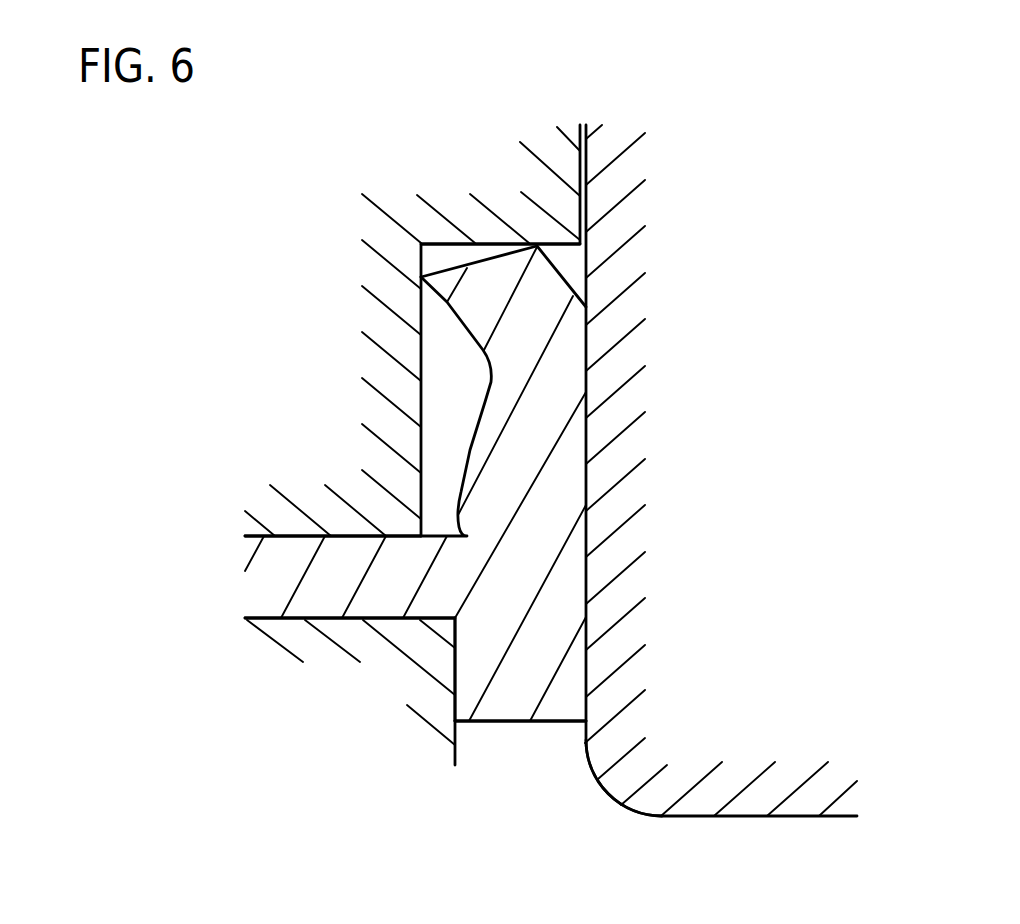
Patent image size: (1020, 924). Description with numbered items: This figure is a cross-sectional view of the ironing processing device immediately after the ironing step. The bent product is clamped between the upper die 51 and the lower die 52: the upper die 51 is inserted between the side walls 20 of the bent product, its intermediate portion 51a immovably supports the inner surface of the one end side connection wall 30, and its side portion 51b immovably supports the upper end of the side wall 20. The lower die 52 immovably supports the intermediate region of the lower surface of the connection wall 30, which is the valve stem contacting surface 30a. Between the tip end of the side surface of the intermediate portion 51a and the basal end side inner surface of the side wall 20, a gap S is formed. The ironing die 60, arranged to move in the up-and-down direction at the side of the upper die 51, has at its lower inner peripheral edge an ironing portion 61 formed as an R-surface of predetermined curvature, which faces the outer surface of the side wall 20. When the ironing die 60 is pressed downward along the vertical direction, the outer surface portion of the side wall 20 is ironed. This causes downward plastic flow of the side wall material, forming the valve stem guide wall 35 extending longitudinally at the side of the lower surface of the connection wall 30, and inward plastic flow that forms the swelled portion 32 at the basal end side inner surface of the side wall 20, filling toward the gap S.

The side wall 20 is at (575, 438).
The one end side connection wall 30 is at (278, 580).
The valve stem contacting surface 30a is at (382, 620).
The swelled portion 32 is at (490, 487).
The valve stem guide wall 35 is at (505, 703).
The upper die 51 is at (313, 244).
The intermediate portion 51a is at (283, 523).
The side portion 51b is at (483, 243).
The lower die 52 is at (330, 721).
The ironing die 60 is at (792, 521).
The ironing portion 61 is at (613, 795).
The gap S is at (442, 518).